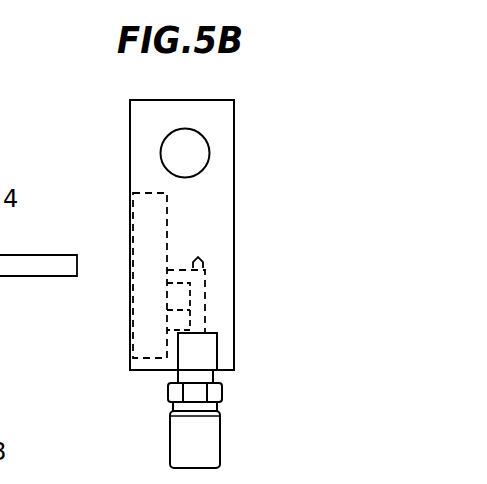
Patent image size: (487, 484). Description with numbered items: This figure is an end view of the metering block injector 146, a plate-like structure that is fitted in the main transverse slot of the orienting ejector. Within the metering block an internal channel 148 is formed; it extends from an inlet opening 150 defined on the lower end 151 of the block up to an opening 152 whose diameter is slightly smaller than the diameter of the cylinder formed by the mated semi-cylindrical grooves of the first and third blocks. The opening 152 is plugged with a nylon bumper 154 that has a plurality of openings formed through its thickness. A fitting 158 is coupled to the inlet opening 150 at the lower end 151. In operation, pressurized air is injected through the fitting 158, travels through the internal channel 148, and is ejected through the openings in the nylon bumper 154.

The metering block injector 146 is at (272, 175).
The internal channel 148 is at (205, 270).
The inlet opening 150 is at (213, 377).
The lower end 151 is at (137, 372).
The opening 152 is at (147, 292).
The nylon bumper 154 is at (147, 224).
The fitting 158 is at (195, 457).